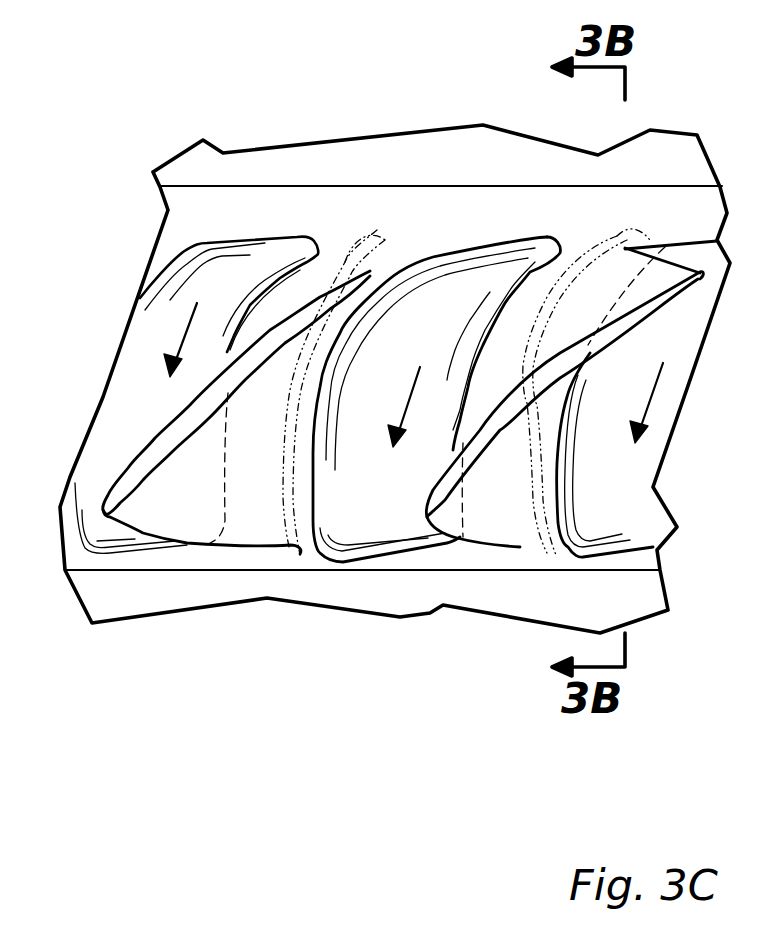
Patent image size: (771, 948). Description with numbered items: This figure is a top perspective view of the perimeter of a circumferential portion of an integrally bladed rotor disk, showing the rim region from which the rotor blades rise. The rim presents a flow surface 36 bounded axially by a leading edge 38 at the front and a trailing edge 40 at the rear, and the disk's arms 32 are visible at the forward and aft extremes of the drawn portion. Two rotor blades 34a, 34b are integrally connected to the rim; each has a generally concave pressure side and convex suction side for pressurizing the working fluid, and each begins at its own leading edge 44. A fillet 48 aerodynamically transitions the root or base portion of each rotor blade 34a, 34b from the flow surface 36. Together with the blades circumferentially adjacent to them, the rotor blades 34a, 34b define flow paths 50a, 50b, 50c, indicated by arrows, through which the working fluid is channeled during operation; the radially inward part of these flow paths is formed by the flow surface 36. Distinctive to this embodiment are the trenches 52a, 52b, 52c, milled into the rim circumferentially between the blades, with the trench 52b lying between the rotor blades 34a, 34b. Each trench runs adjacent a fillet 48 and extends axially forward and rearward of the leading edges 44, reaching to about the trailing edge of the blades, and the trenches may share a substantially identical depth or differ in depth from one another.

The arm 32 is at (443, 158).
The rotor blade 34a is at (660, 298).
The rotor blade 34b is at (178, 407).
The flow surface 36 is at (463, 222).
The leading edge 38 is at (707, 177).
The trailing edge 40 is at (463, 570).
The leading edge 44 is at (362, 267).
The fillet 48 is at (537, 498).
The flow path 50a is at (647, 417).
The flow path 50b is at (407, 403).
The flow path 50c is at (183, 350).
The trench 52a is at (667, 393).
The trench 52b is at (533, 253).
The trench 52c is at (197, 282).